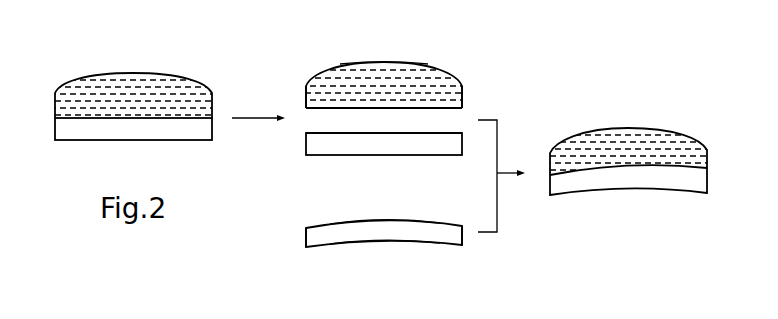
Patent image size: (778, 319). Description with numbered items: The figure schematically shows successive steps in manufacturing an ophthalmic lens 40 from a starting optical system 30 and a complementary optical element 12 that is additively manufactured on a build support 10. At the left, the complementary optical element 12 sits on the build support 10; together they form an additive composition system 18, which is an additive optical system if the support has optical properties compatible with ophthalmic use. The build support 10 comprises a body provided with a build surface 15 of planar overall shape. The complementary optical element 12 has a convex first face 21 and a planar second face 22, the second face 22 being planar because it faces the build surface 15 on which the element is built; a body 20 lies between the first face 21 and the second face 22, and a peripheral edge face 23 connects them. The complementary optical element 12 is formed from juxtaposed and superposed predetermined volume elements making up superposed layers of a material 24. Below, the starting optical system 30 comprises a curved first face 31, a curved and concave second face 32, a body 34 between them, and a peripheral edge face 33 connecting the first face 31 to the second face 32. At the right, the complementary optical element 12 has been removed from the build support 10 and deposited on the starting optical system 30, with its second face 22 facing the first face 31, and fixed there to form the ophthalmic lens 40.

The build support 10 is at (56, 128).
The complementary optical element 12 is at (56, 105).
The build surface 15 is at (440, 133).
The additive composition system 18 is at (196, 57).
The body 20 is at (395, 68).
The first face 21 is at (343, 64).
The second face 22 is at (328, 108).
The peripheral edge face 23 is at (306, 98).
The material 24 is at (455, 90).
The starting optical system 30 is at (283, 238).
The first face 31 is at (380, 220).
The second face 32 is at (378, 242).
The peripheral edge face 33 is at (462, 240).
The body 34 is at (337, 237).
The ophthalmic lens 40 is at (641, 97).